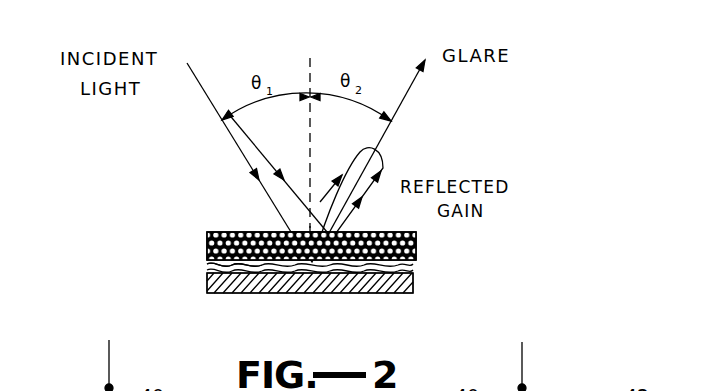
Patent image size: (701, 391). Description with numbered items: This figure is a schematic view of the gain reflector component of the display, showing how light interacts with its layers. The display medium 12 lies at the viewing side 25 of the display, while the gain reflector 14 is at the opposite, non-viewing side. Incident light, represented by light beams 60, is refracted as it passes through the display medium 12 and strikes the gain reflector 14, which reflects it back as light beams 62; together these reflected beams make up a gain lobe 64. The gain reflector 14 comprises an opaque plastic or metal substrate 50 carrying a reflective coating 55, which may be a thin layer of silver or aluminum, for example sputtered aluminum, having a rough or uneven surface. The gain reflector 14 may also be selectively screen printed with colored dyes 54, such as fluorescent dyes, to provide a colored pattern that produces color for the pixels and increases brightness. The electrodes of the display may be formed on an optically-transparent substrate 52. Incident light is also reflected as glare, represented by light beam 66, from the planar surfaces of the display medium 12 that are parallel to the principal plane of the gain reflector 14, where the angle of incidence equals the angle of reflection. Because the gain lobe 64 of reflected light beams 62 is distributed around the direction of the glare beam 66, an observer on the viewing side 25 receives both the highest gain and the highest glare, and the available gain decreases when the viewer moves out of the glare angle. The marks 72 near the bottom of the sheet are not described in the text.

The display medium 12 is at (228, 223).
The gain reflector 14 is at (432, 283).
The viewing side 25 is at (615, 74).
The substrate 50 is at (383, 293).
The optically-transparent substrate 52 is at (394, 233).
The colored dyes 54 is at (207, 265).
The reflective coating 55 is at (414, 265).
The light beams 60 is at (227, 112).
The light beams 62 is at (382, 167).
The gain lobe 64 is at (343, 170).
The light beam 66 is at (410, 93).
The reference markers 72 is at (108, 350).